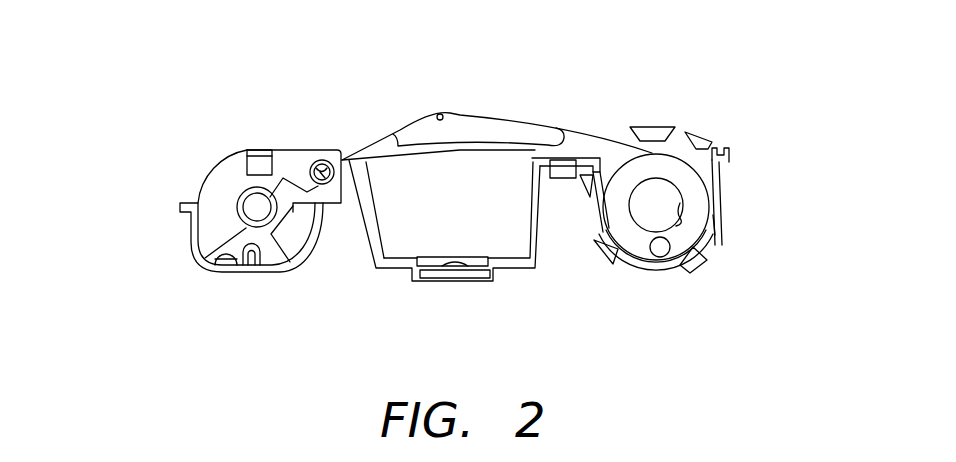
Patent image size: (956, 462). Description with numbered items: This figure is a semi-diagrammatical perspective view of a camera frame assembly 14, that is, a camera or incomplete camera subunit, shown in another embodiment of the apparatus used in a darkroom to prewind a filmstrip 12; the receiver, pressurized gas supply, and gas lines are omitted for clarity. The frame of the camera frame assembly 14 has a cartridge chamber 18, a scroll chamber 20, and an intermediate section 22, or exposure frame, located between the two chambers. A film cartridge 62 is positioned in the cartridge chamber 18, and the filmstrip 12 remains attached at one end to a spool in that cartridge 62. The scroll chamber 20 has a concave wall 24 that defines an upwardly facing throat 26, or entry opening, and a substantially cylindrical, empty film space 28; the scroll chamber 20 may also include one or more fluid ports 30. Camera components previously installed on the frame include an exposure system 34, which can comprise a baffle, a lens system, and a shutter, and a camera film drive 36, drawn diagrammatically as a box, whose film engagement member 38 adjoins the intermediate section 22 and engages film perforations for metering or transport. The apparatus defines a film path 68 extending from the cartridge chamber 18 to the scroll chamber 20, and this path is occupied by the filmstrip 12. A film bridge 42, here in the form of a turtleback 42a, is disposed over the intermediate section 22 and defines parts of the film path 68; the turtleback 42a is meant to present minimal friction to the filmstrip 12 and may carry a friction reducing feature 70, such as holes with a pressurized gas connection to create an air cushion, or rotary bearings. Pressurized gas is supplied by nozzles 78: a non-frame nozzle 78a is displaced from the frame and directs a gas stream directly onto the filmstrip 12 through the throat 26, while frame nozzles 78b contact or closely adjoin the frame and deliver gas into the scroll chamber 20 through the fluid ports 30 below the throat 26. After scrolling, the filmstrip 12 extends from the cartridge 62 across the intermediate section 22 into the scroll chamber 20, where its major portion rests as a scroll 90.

The filmstrip 12 is at (662, 156).
The camera frame assembly 14 is at (434, 255).
The cartridge chamber 18 is at (193, 240).
The scroll chamber 20 is at (715, 175).
The intermediate section 22 is at (403, 153).
The concave wall 24 is at (652, 250).
The throat 26 is at (677, 147).
The film space 28 is at (734, 207).
The fluid port 30 is at (712, 251).
The exposure system 34 is at (472, 296).
The camera film drive 36 is at (547, 206).
The film engagement member 38 is at (554, 151).
The film bridge 42 is at (497, 92).
The turtleback 42a is at (480, 117).
The cartridge 62 is at (292, 149).
The film path 68 is at (662, 156).
The friction reducing feature 70 is at (440, 112).
The nozzle 78 is at (699, 206).
The non-frame nozzle 78a is at (702, 132).
The frame nozzle 78b is at (592, 238).
The scroll 90 is at (656, 205).